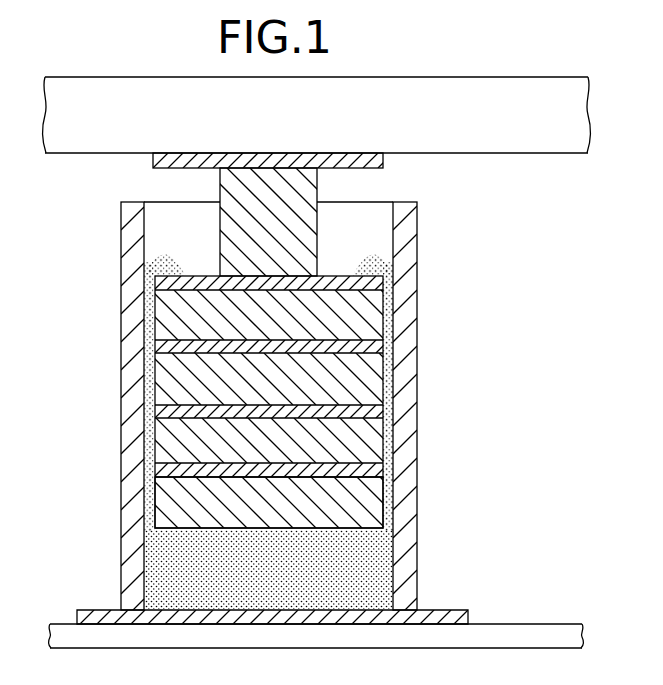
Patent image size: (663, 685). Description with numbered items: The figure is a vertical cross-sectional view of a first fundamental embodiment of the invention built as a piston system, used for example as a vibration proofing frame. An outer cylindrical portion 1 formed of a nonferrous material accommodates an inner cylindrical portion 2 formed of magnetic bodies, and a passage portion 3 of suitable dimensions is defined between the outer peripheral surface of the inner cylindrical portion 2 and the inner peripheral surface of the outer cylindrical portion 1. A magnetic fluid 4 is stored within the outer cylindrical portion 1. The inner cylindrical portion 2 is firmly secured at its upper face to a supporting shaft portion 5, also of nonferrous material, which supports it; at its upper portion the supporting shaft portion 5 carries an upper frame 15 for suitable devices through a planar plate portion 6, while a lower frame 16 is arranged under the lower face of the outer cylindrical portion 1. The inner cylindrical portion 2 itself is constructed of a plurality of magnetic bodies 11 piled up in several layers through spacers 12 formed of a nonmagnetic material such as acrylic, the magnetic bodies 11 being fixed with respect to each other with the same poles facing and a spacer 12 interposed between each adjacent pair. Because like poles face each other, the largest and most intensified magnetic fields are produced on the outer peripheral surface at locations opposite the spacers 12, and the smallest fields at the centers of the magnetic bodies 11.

The outer cylindrical portion 1 is at (418, 240).
The inner cylindrical portion 2 is at (149, 388).
The passage portion 3 is at (275, 402).
The magnetic fluid 4 is at (155, 570).
The supporting shaft portion 5 is at (318, 188).
The planar plate portion 6 is at (152, 160).
The magnetic bodies 11 is at (371, 512).
The spacers 12 is at (374, 471).
The upper frame 15 is at (528, 83).
The lower frame 16 is at (544, 628).